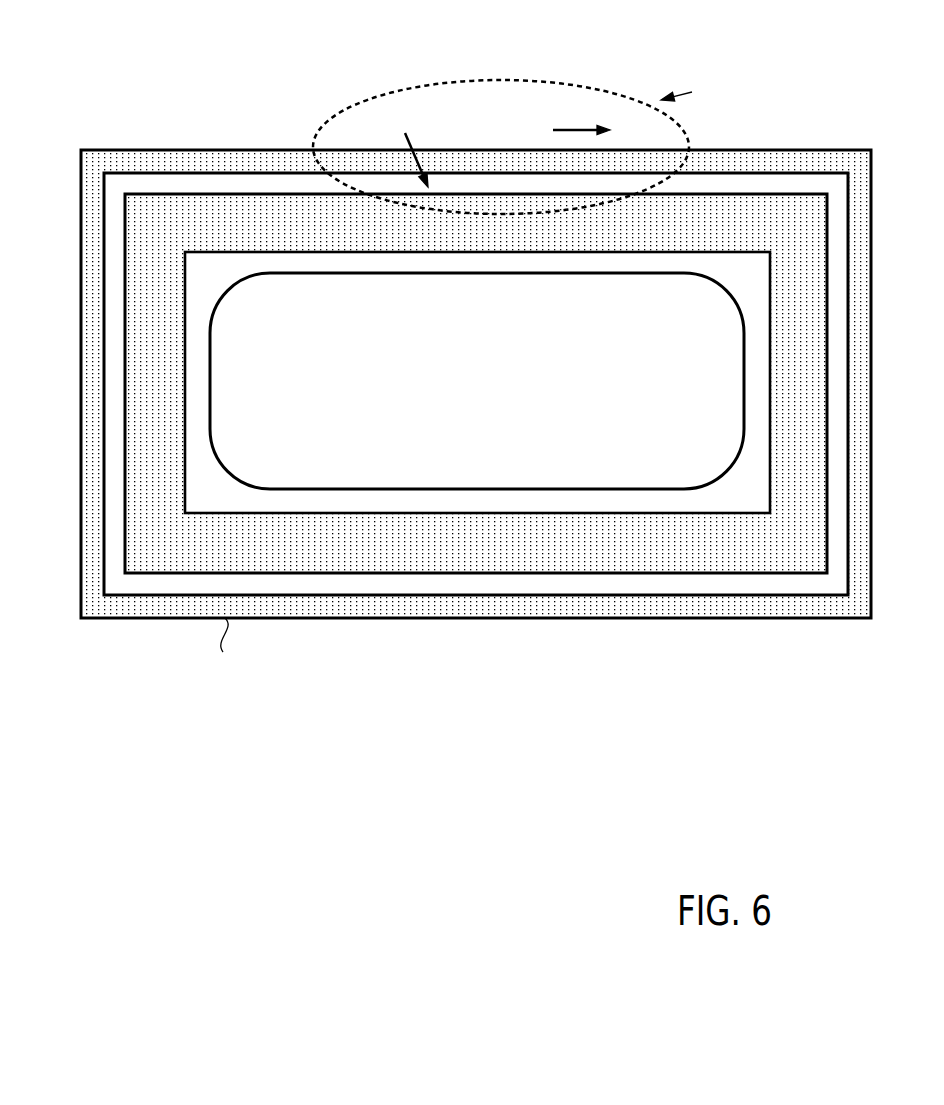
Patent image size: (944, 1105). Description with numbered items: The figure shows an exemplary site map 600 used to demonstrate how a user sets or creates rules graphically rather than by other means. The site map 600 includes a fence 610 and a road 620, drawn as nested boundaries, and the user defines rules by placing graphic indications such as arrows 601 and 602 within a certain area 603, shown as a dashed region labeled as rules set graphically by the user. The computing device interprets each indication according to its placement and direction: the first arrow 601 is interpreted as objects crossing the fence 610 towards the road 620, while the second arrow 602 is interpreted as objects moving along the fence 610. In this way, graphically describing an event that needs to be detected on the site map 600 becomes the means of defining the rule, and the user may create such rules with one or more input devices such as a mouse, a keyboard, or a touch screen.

The site map 600 is at (439, 357).
The arrow 601 is at (442, 129).
The arrow 602 is at (553, 130).
The area 603 is at (401, 89).
The fence 610 is at (81, 299).
The road 620 is at (135, 389).